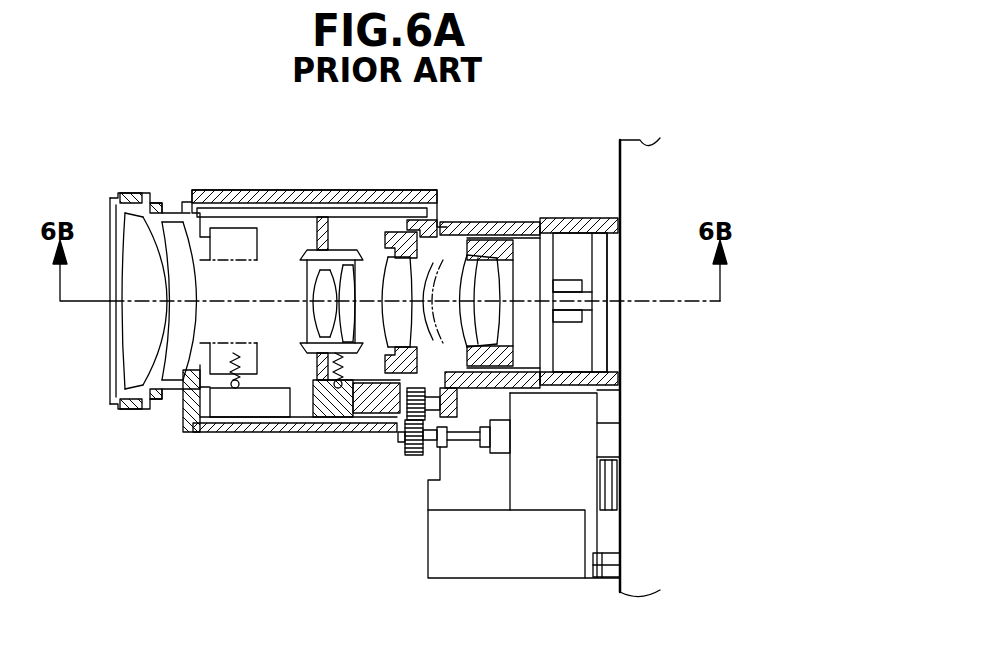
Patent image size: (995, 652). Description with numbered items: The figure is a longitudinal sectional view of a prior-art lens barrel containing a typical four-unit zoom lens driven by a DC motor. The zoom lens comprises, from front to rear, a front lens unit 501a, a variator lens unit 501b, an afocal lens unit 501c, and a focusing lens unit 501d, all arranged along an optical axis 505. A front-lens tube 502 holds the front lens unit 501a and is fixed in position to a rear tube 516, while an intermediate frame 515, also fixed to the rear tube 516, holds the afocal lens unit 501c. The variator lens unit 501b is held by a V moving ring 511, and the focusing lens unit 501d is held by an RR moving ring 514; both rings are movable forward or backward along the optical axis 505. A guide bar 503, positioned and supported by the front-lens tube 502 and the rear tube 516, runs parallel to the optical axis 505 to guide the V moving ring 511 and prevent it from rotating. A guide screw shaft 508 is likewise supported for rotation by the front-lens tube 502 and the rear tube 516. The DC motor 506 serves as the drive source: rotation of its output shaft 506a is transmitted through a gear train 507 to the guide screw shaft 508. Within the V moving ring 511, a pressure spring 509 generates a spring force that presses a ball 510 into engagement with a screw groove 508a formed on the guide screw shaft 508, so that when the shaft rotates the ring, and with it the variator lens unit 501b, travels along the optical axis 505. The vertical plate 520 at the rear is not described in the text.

The front lens unit 501a is at (158, 245).
The variator lens unit 501b is at (358, 290).
The afocal lens unit 501c is at (436, 268).
The focusing lens unit 501d is at (498, 265).
The front-lens tube 502 is at (213, 200).
The guide bar 503 is at (267, 212).
The optical axis 505 is at (683, 306).
The DC motor 506 is at (553, 558).
The output shaft 506a is at (460, 440).
The gear train 507 is at (413, 458).
The guide screw shaft 508 is at (226, 405).
The screw groove 508a is at (347, 398).
The pressure spring 509 is at (327, 393).
The ball 510 is at (338, 417).
The V moving ring 511 is at (366, 258).
The RR moving ring 514 is at (487, 248).
The intermediate frame 515 is at (401, 280).
The rear tube 516 is at (572, 228).
The camera body plate 520 is at (618, 146).